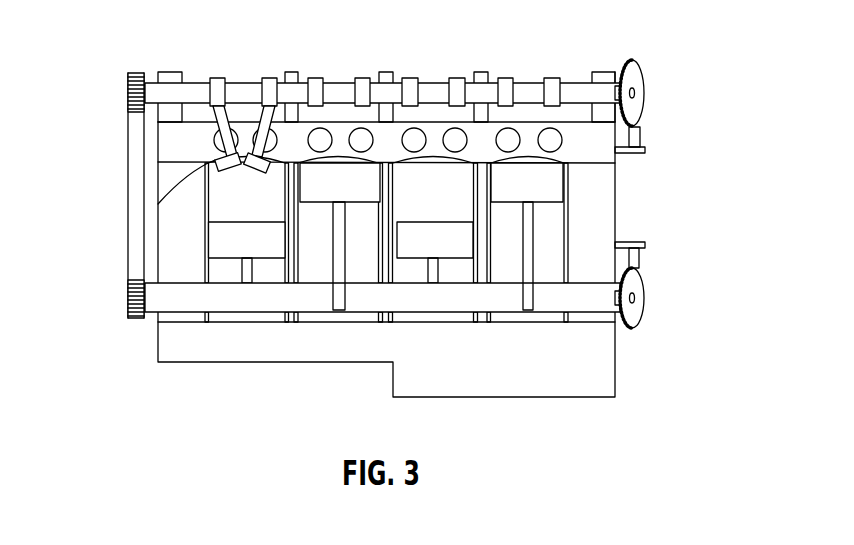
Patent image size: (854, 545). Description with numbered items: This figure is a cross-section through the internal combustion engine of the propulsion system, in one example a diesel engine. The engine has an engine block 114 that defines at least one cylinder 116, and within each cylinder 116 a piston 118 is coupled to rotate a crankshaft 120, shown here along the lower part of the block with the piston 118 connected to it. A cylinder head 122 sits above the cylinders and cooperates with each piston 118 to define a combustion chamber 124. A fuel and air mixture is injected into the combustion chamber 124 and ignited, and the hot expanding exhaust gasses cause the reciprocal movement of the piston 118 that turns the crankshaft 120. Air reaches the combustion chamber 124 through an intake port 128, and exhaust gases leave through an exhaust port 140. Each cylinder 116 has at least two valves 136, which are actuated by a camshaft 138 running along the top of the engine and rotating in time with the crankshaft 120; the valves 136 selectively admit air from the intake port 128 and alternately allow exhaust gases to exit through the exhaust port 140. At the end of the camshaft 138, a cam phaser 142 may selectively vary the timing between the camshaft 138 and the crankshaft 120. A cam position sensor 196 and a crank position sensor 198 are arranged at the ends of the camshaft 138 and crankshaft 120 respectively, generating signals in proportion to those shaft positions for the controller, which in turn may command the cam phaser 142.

The engine block 114 is at (165, 223).
The cylinder 116 is at (393, 188).
The piston 118 is at (405, 252).
The crankshaft 120 is at (188, 303).
The cylinder head 122 is at (157, 132).
The combustion chamber 124 is at (556, 163).
The intake port 128 is at (416, 130).
The valve 136 is at (228, 160).
The camshaft 138 is at (242, 83).
The exhaust port 140 is at (360, 128).
The cam phaser 142 is at (127, 97).
The cam position sensor 196 is at (646, 150).
The crank position sensor 198 is at (646, 245).